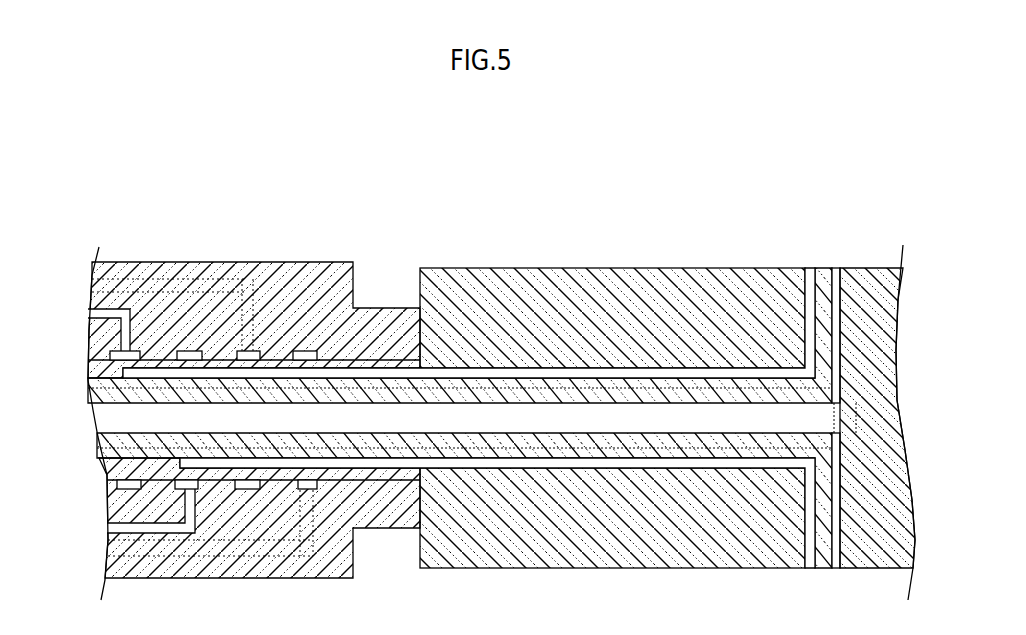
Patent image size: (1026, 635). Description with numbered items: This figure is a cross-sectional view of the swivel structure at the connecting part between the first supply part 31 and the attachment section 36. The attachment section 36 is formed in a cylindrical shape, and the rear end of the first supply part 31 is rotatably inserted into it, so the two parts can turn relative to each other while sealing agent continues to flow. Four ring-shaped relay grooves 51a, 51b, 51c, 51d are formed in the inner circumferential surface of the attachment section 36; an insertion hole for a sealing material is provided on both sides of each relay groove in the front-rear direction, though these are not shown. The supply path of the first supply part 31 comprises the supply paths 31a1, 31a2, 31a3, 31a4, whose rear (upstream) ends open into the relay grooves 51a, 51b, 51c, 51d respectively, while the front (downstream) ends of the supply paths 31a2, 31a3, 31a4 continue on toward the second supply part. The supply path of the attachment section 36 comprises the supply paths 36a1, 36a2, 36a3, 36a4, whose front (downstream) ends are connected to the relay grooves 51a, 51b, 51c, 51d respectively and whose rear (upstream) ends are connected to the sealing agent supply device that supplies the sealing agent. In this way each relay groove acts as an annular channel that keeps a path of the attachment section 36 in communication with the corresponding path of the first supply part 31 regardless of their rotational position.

The first supply part 31 is at (500, 268).
The supply path 31a1 is at (811, 268).
The supply path 31a2 is at (827, 268).
The supply path 31a3 is at (842, 268).
The supply path 31a4 is at (857, 268).
The attachment section 36 is at (302, 262).
The supply path 36a1 is at (90, 314).
The supply path 36a2 is at (108, 529).
The supply path 36a3 is at (90, 292).
The supply path 36a4 is at (107, 549).
The relay groove 51a is at (112, 354).
The relay groove 51b is at (176, 480).
The relay groove 51c is at (247, 480).
The relay groove 51d is at (302, 480).